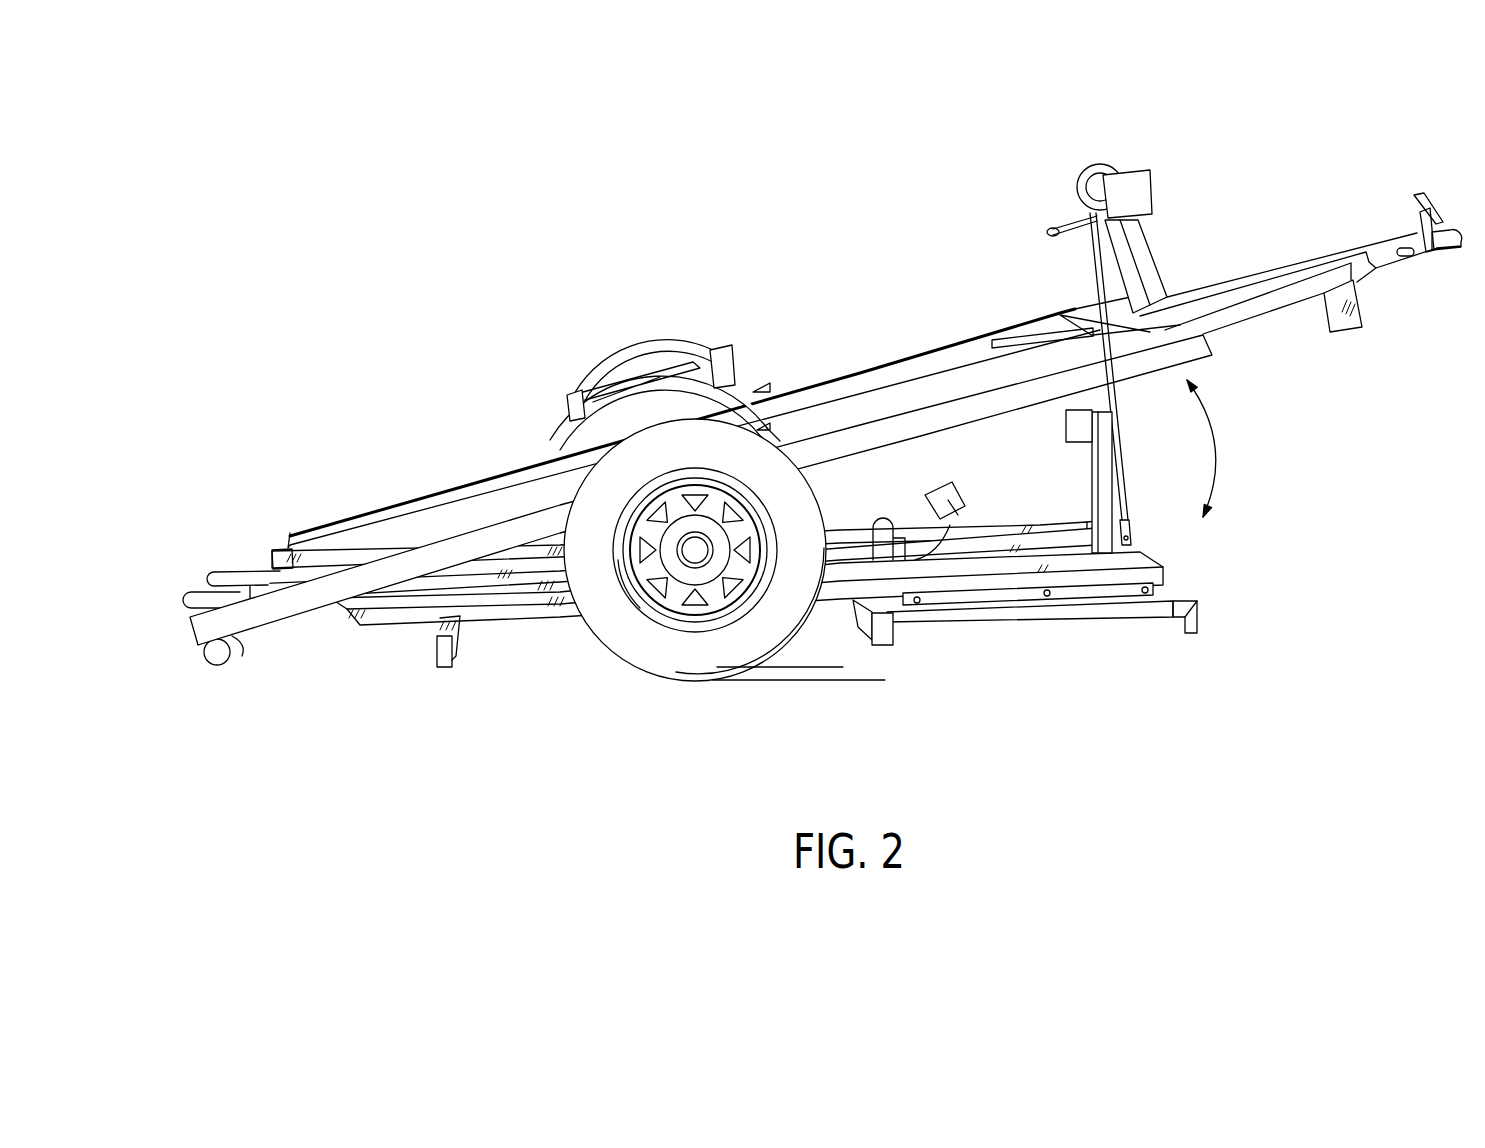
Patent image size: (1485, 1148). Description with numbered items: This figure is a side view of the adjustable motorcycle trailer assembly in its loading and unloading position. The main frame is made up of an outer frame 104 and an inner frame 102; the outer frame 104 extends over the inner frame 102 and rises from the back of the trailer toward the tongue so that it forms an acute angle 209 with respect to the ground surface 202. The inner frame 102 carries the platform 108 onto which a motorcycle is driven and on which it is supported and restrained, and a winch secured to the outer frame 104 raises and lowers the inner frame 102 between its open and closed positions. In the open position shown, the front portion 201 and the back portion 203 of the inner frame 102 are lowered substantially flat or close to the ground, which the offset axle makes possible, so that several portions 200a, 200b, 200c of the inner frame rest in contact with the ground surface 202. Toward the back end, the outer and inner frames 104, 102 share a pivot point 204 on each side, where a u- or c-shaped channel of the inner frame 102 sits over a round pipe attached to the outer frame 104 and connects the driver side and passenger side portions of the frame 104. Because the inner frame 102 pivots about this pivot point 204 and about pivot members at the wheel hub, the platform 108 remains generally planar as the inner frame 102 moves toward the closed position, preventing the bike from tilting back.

The inner frame 102 is at (1101, 630).
The outer frame 104 is at (1229, 369).
The platform 108 is at (268, 556).
The front portion 201 is at (745, 575).
The ground surface 202 is at (725, 684).
The back portion 203 is at (242, 557).
The pivot point 204 is at (216, 655).
The acute angle 209 is at (1215, 447).
The ground-contacting portion 200a is at (898, 618).
The ground-contacting portion 200b is at (447, 666).
The ground-contacting portion 200c is at (200, 585).